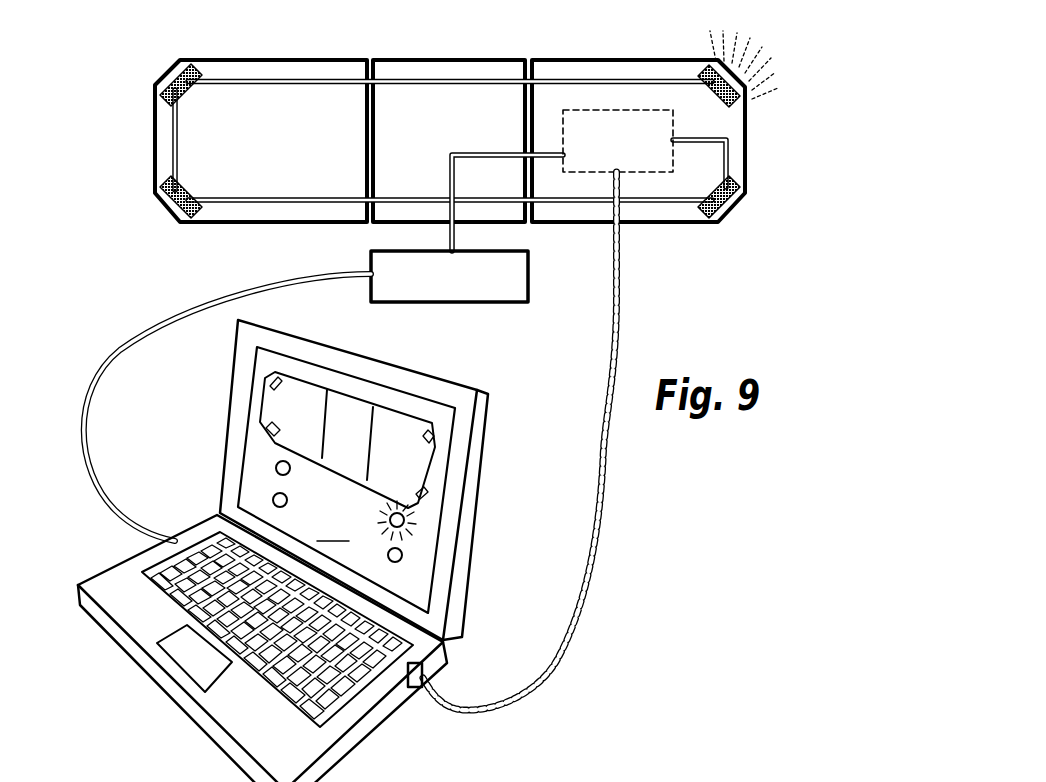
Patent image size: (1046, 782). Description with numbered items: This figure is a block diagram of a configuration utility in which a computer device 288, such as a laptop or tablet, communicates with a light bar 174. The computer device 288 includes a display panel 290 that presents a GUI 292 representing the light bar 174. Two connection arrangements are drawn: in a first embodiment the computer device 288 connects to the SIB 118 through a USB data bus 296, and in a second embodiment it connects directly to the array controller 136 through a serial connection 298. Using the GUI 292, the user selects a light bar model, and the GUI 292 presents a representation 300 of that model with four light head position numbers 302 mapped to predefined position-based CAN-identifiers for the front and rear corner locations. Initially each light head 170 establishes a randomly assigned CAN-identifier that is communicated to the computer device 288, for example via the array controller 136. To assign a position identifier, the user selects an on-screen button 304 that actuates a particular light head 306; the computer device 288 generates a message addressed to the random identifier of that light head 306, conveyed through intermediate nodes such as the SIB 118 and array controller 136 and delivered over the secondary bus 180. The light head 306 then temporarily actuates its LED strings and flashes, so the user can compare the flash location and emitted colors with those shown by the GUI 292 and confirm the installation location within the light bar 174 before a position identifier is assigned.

The SIB 118 is at (528, 278).
The array controller 136 is at (595, 108).
The light head 170 is at (157, 110).
The light bar 174 is at (153, 98).
The secondary bus 180 is at (272, 80).
The computer device 288 is at (488, 398).
The display panel 290 is at (331, 509).
The GUI 292 is at (437, 498).
The USB data bus 296 is at (98, 378).
The serial connection 298 is at (604, 458).
The representation 300 is at (270, 398).
The light head position numbers 302 is at (410, 568).
The on-screen button 304 is at (408, 525).
The light head 306 is at (703, 72).